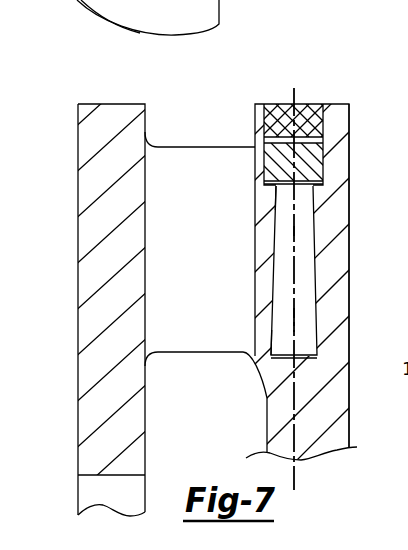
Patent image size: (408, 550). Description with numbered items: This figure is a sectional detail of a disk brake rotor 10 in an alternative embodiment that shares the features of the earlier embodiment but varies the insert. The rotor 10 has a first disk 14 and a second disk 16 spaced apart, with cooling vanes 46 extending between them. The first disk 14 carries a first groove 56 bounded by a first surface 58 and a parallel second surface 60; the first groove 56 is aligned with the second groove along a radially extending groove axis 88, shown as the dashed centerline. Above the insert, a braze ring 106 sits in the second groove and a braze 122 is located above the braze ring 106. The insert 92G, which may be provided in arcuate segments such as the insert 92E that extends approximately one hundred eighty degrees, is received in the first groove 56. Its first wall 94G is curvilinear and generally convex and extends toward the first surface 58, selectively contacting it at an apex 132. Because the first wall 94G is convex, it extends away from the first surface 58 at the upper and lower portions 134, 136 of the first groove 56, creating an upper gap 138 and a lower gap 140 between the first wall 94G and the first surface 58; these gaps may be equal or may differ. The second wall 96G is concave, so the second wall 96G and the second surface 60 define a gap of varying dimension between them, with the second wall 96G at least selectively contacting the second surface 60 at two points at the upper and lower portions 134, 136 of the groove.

The disk brake rotor 10 is at (93, 76).
The first disk 14 is at (312, 430).
The second disk 16 is at (78, 388).
The cooling vanes 46 is at (208, 278).
The first groove 56 is at (267, 400).
The first surface 58 is at (270, 277).
The second surface 60 is at (320, 230).
The groove axis 88 is at (291, 90).
The insert 92E is at (157, 14).
The insert 92G is at (289, 231).
The first wall 94G is at (275, 325).
The second wall 96G is at (311, 329).
The braze ring 106 is at (272, 160).
The braze 122 is at (307, 113).
The apex 132 is at (266, 256).
The upper portion 134 is at (266, 193).
The lower portion 136 is at (264, 339).
The upper gap 138 is at (298, 180).
The lower gap 140 is at (267, 381).